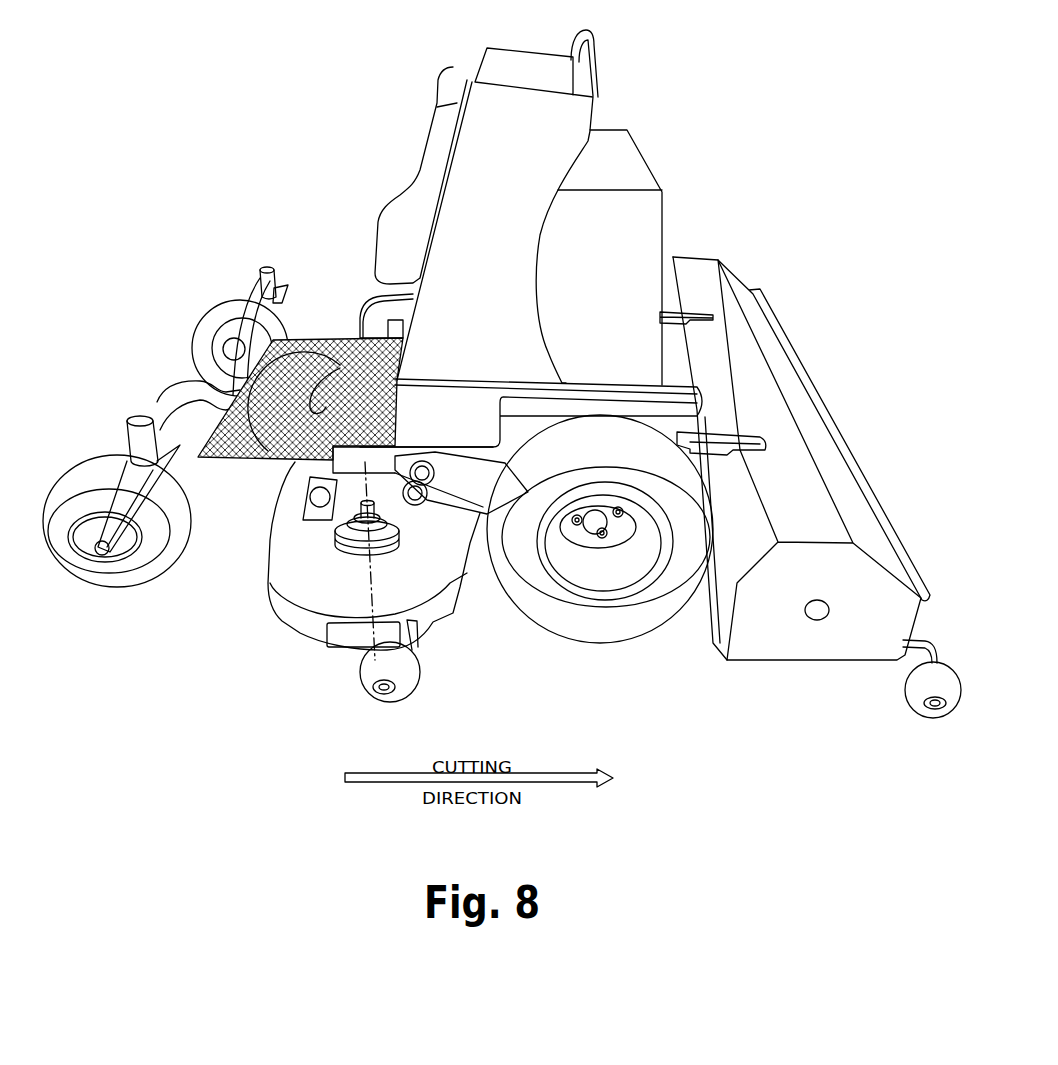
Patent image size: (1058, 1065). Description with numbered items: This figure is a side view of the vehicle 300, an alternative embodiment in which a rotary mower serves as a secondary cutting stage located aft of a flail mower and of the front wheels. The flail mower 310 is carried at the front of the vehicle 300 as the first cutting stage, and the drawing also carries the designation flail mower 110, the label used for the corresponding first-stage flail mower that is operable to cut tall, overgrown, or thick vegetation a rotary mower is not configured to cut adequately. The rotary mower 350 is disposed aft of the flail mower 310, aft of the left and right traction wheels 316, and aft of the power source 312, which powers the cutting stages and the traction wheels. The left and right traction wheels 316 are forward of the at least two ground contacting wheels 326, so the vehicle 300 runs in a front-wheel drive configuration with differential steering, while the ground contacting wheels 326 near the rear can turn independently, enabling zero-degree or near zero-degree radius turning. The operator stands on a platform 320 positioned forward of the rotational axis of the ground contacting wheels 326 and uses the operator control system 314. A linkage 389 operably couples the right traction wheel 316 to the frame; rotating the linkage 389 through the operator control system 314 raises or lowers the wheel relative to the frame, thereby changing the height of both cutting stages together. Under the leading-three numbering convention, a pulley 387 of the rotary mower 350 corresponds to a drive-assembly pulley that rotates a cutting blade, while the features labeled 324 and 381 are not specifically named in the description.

The flail mower 110 is at (912, 413).
The vehicle 300 is at (290, 194).
The flail mower 310 is at (865, 523).
The power source 312 is at (668, 322).
The operator control system 314 is at (478, 62).
The left and right traction wheels 316 is at (531, 628).
The platform 320 is at (300, 467).
The steering lever 324 is at (132, 418).
The ground contacting wheels 326 is at (197, 347).
The rotary mower 350 is at (272, 590).
The spindle axis 381 is at (368, 607).
The pulley 387 is at (390, 547).
The linkage 389 is at (473, 460).